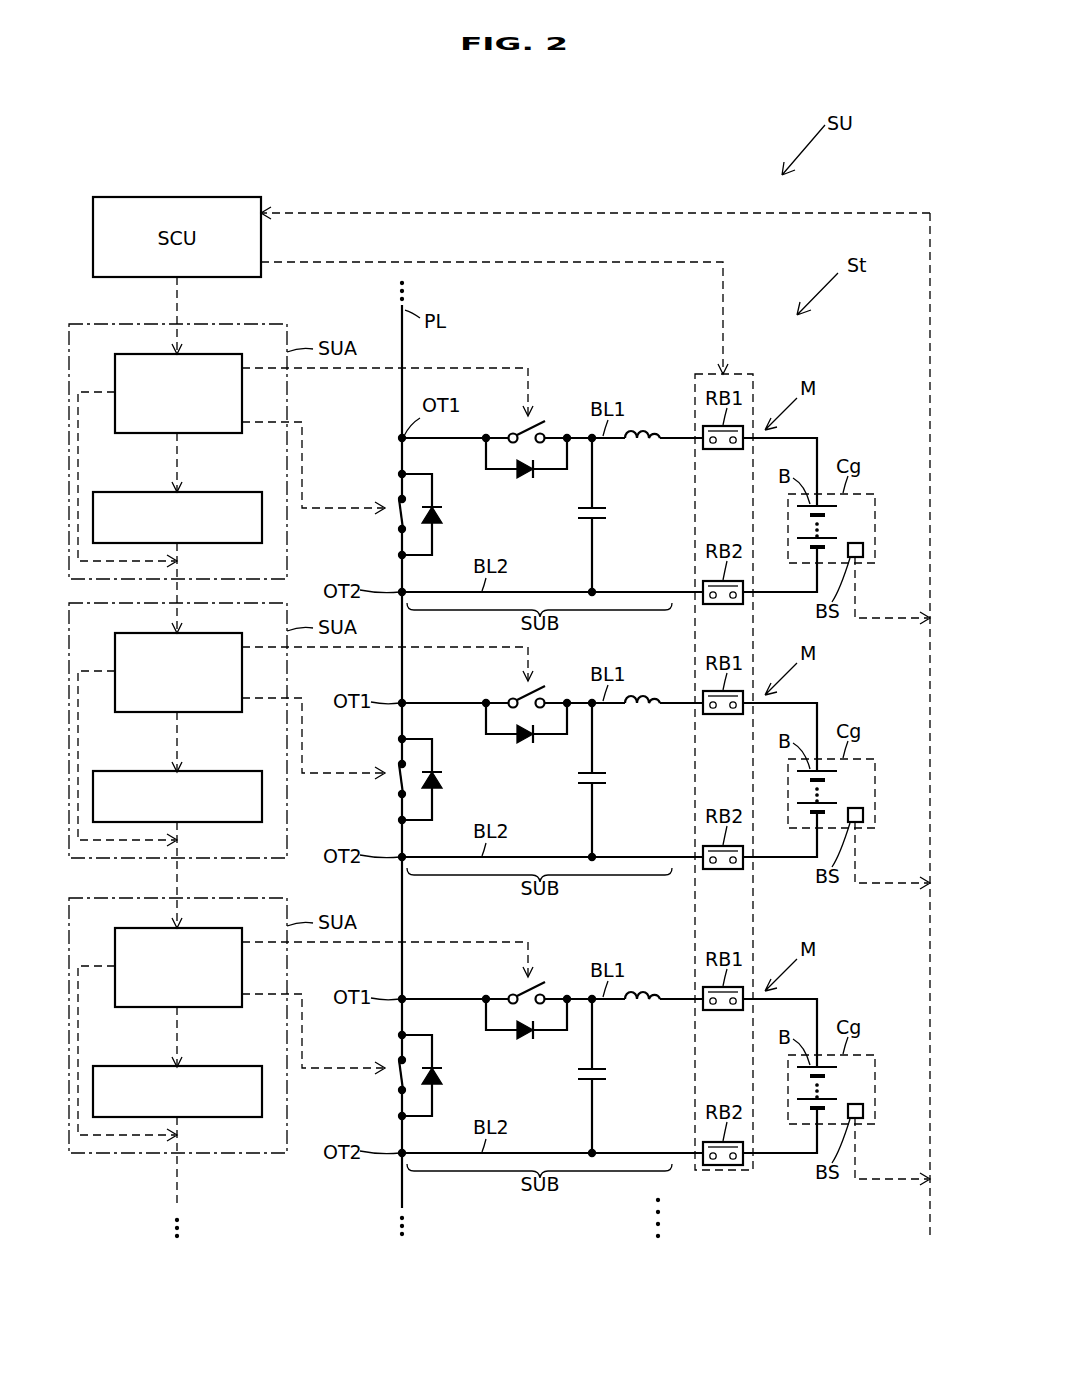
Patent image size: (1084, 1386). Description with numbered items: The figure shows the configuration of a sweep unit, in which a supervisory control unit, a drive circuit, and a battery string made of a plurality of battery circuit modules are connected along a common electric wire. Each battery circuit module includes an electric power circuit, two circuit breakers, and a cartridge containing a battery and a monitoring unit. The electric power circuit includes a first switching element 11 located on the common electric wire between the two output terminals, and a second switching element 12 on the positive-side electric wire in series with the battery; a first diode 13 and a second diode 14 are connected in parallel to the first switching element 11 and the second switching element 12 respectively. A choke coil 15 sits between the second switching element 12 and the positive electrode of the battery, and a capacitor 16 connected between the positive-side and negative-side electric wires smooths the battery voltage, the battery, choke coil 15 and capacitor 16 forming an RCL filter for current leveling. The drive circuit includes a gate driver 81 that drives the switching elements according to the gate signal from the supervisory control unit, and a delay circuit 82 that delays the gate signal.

The first switching element 11 is at (397, 512).
The second switching element 12 is at (520, 430).
The first diode 13 is at (438, 508).
The second diode 14 is at (536, 473).
The choke coil 15 is at (643, 432).
The capacitor 16 is at (586, 521).
The gate driver 81 is at (207, 435).
The delay circuit 82 is at (113, 492).